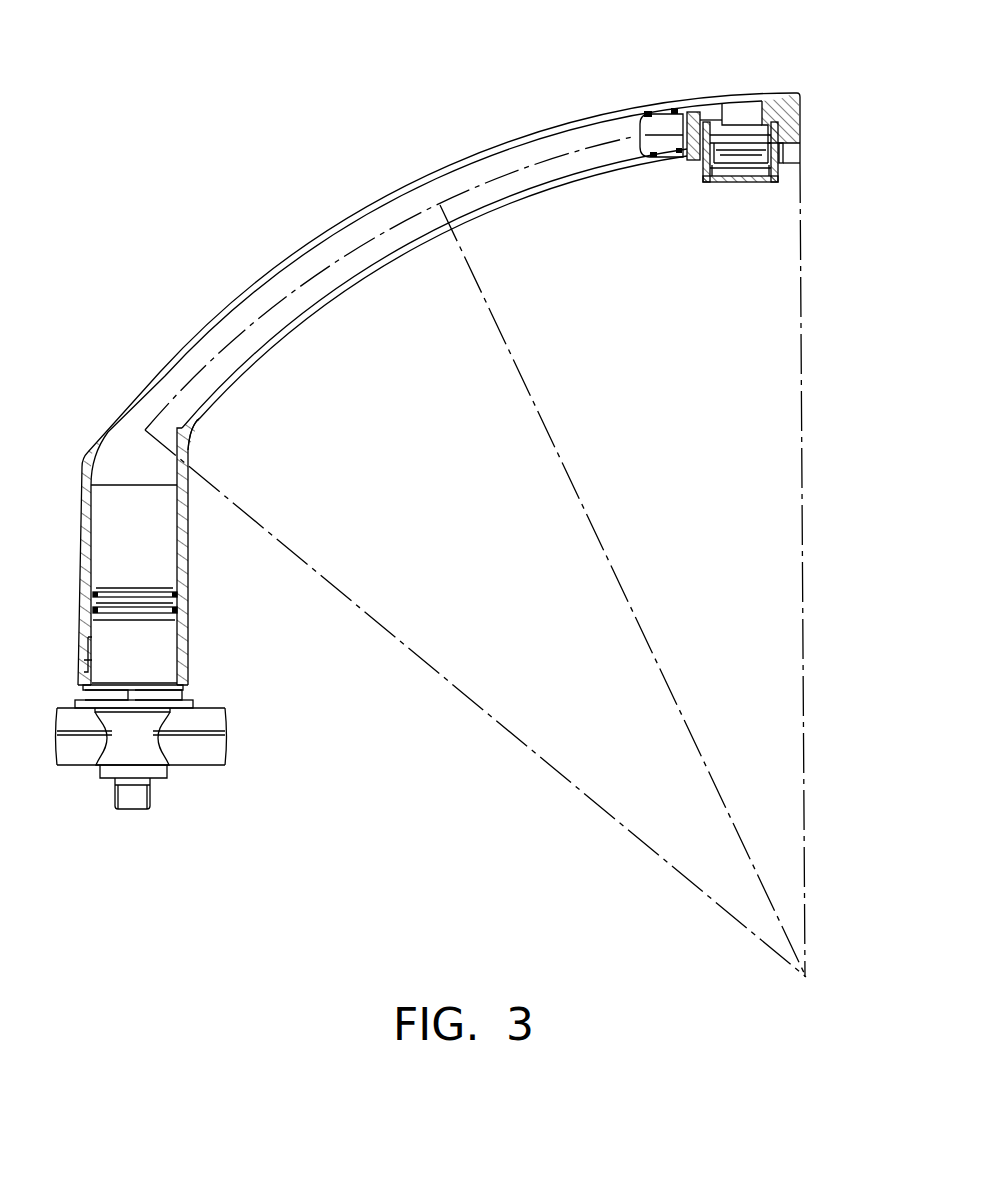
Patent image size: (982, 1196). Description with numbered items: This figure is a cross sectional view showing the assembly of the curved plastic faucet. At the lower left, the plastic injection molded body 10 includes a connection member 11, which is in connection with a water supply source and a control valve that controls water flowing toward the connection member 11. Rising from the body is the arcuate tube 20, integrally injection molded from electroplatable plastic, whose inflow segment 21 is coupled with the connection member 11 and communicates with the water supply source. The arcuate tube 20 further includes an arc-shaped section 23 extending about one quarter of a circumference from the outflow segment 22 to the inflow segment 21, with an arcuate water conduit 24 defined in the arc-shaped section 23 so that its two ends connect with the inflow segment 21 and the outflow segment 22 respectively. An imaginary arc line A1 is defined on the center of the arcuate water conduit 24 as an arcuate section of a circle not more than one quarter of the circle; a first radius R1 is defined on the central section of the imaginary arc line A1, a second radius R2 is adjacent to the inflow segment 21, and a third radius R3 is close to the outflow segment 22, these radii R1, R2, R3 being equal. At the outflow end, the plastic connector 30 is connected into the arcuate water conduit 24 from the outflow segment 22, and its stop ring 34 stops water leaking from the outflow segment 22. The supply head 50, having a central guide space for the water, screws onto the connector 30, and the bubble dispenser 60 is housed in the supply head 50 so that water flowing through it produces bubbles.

The body 10 is at (162, 782).
The connection member 11 is at (160, 648).
The arcuate tube 20 is at (420, 178).
The inflow segment 21 is at (160, 572).
The outflow segment 22 is at (757, 100).
The arc-shaped section 23 is at (390, 262).
The arcuate water conduit 24 is at (270, 293).
The connector 30 is at (718, 92).
The stop ring 34 is at (673, 108).
The supply head 50 is at (697, 180).
The bubble dispenser 60 is at (758, 190).
The imaginary arc line A1 is at (550, 203).
The first radius R1 is at (600, 540).
The second radius R2 is at (413, 660).
The third radius R3 is at (800, 440).